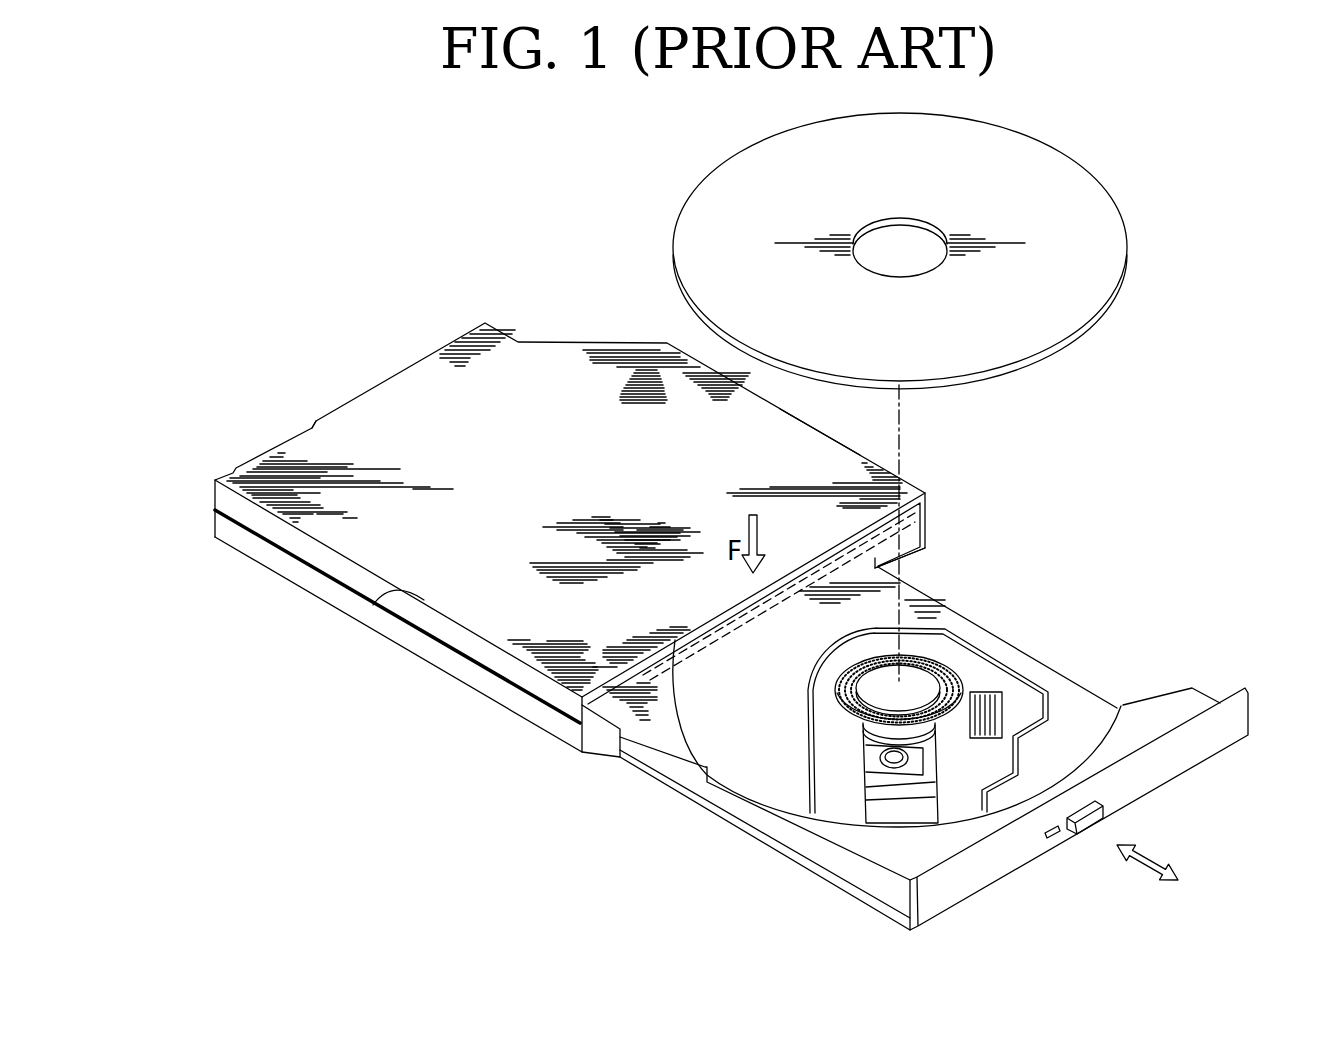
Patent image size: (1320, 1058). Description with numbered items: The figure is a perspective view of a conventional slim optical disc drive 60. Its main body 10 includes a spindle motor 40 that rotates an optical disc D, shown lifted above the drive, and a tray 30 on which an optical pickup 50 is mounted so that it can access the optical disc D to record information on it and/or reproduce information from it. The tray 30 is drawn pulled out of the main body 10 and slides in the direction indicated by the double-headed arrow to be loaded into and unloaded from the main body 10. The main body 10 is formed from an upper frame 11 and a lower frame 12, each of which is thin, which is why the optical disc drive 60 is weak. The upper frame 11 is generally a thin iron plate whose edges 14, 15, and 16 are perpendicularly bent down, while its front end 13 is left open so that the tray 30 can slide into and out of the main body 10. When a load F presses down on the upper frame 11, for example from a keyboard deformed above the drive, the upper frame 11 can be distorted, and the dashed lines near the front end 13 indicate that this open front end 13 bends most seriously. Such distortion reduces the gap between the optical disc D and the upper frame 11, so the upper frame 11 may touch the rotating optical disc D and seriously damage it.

The main body 10 is at (580, 318).
The upper frame 11 is at (236, 503).
The lower frame 12 is at (235, 532).
The front end 13 is at (918, 513).
The edge 14 is at (820, 432).
The edge 15 is at (373, 605).
The edge 16 is at (347, 402).
The tray 30 is at (1086, 676).
The spindle motor 40 is at (957, 677).
The optical pickup 50 is at (887, 753).
The optical disc drive 60 is at (470, 781).
The optical disc D is at (1050, 190).